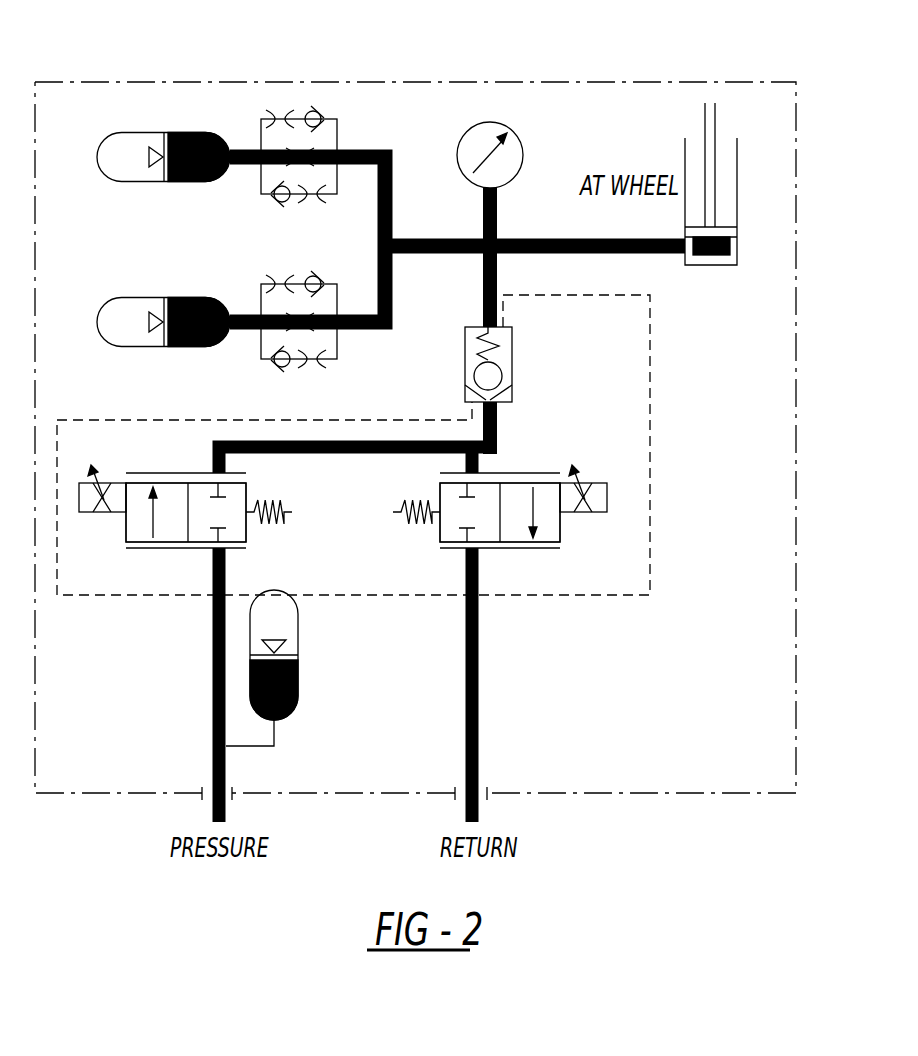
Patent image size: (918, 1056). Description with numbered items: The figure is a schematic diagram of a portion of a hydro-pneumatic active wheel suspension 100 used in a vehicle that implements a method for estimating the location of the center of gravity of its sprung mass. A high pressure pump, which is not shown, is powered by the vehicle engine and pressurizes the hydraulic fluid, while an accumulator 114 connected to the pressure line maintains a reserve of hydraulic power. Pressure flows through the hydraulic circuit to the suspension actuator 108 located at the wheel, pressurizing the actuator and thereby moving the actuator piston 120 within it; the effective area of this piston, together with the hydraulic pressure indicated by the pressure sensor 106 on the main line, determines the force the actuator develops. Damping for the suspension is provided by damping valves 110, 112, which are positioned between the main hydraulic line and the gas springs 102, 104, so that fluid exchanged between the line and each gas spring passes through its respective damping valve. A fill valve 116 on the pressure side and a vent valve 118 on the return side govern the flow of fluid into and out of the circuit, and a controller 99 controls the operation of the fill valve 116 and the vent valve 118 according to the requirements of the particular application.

The controller 99 is at (246, 545).
The hydro-pneumatic active wheel suspension 100 is at (674, 733).
The gas spring 102 is at (122, 132).
The gas spring 104 is at (116, 300).
The pressure sensor 106 is at (490, 122).
The suspension actuator 108 is at (737, 165).
The damping valve 110 is at (340, 128).
The damping valve 112 is at (265, 356).
The accumulator 114 is at (298, 695).
The fill valve 116 is at (127, 530).
The vent valve 118 is at (547, 475).
The actuator piston 120 is at (722, 256).